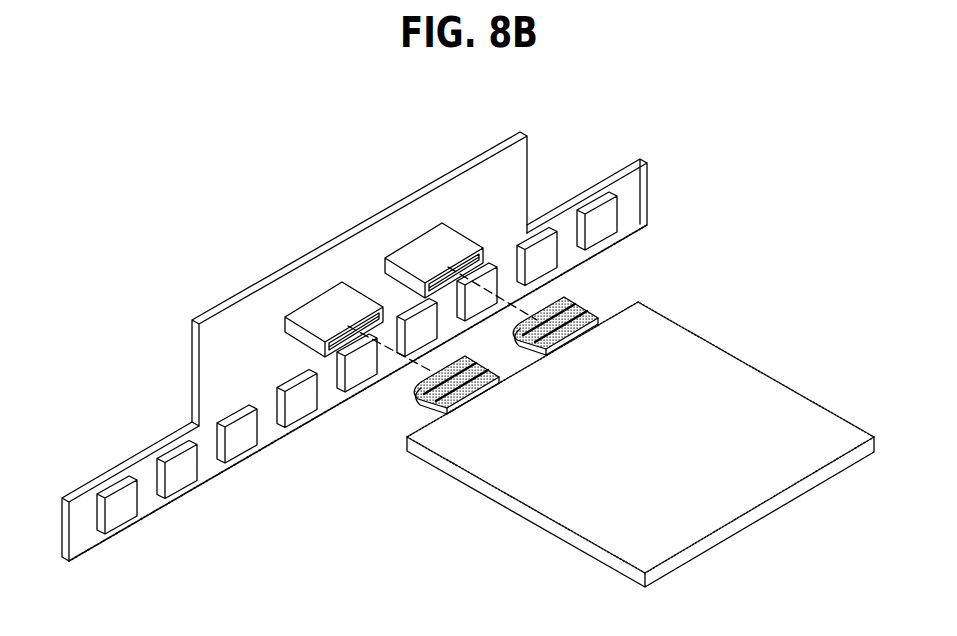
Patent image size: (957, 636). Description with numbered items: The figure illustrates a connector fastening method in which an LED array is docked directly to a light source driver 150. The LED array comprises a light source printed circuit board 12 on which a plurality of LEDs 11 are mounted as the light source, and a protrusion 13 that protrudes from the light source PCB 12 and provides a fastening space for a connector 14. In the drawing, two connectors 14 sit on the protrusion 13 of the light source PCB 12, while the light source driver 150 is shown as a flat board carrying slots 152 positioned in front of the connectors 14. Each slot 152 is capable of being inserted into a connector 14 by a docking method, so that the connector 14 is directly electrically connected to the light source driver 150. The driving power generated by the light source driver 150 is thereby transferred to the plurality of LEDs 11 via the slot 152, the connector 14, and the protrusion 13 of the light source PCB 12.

The LED 11 is at (183, 480).
The light source printed circuit board 12 is at (142, 470).
The protrusion 13 is at (233, 333).
The connector 14 is at (425, 247).
The light source driver 150 is at (722, 346).
The slot 152 is at (580, 300).